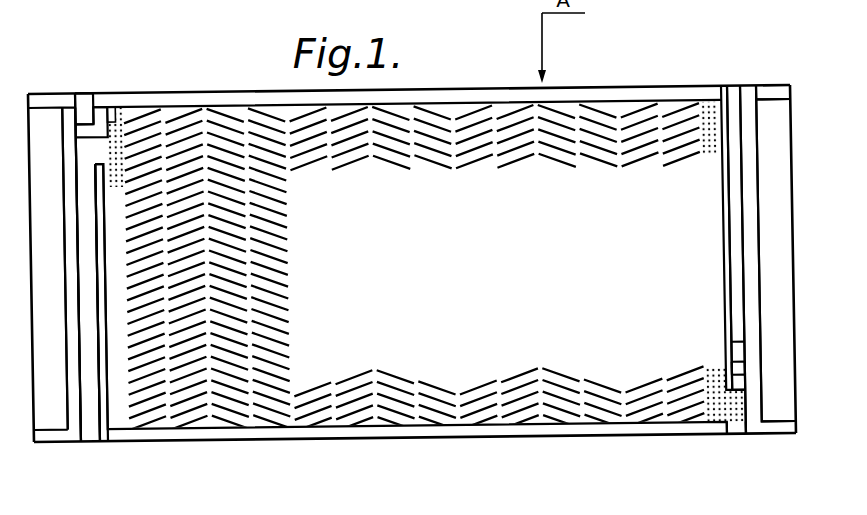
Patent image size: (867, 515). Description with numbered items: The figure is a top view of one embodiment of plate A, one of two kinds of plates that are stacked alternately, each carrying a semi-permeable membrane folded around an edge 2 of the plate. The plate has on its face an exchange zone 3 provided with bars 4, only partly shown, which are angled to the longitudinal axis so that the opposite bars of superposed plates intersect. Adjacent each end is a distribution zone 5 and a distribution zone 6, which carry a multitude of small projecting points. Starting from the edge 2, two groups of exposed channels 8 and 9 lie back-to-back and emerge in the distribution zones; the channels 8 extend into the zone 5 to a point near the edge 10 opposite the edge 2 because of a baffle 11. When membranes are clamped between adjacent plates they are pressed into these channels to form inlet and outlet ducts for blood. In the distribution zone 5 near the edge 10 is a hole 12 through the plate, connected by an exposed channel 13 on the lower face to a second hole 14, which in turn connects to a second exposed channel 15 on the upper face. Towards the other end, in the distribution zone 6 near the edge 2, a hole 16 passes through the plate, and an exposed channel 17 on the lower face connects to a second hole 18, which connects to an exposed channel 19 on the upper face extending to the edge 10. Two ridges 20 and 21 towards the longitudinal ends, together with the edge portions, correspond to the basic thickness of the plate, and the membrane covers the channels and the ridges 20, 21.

The edge 2 is at (400, 432).
The exchange zone 3 is at (595, 363).
The bars 4 is at (267, 402).
The distribution zone 5 is at (121, 140).
The distribution zone 6 is at (717, 388).
The exposed channels 8 is at (88, 432).
The exposed channels 9 is at (741, 427).
The edge 10 is at (602, 92).
The baffle 11 is at (102, 355).
The hole 12 is at (109, 113).
The exposed channel 13 is at (97, 108).
The hole 14 is at (77, 118).
The exposed channel 15 is at (83, 98).
The hole 16 is at (745, 383).
The exposed channel 17 is at (743, 369).
The hole 18 is at (742, 354).
The exposed channel 19 is at (735, 93).
The ridge 20 is at (748, 102).
The ridge 21 is at (76, 417).